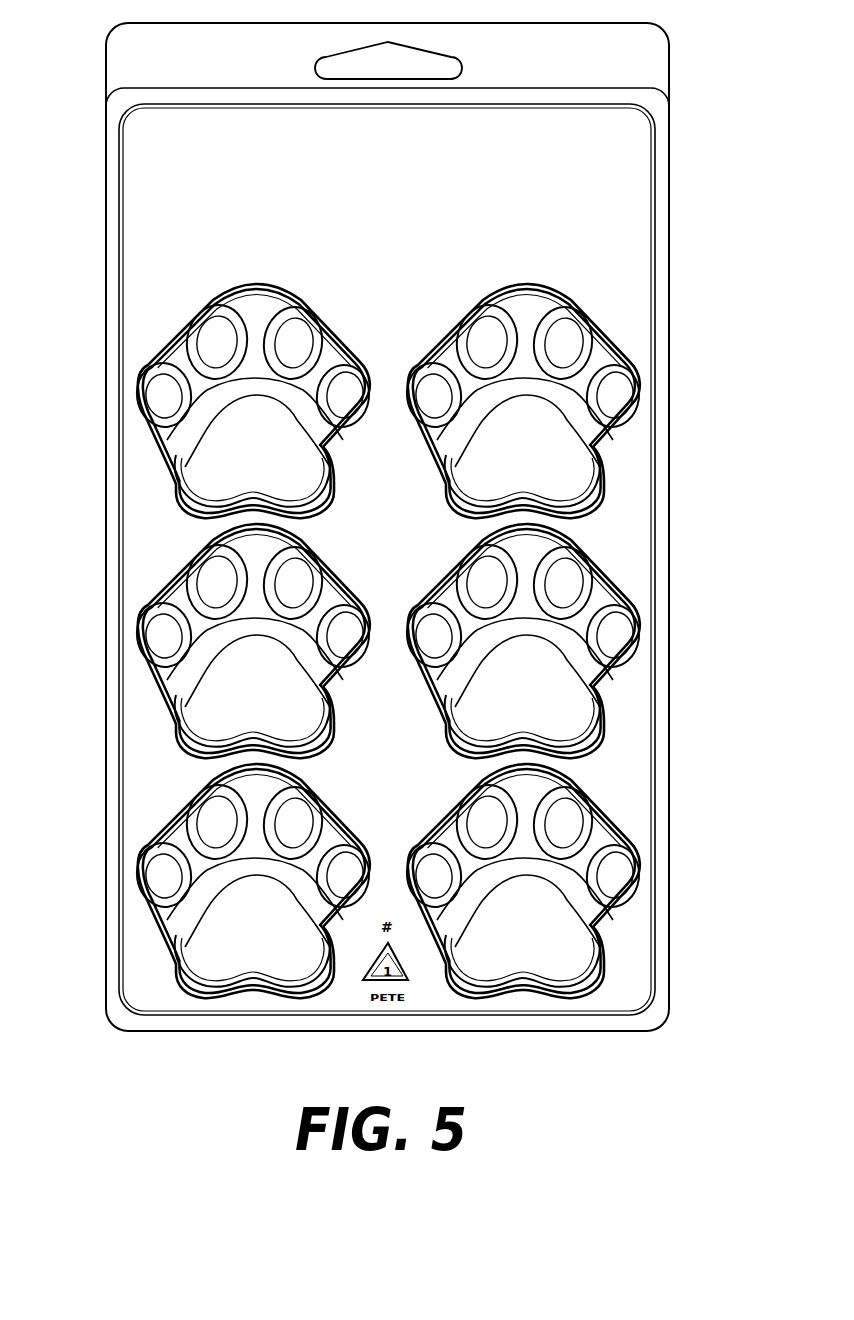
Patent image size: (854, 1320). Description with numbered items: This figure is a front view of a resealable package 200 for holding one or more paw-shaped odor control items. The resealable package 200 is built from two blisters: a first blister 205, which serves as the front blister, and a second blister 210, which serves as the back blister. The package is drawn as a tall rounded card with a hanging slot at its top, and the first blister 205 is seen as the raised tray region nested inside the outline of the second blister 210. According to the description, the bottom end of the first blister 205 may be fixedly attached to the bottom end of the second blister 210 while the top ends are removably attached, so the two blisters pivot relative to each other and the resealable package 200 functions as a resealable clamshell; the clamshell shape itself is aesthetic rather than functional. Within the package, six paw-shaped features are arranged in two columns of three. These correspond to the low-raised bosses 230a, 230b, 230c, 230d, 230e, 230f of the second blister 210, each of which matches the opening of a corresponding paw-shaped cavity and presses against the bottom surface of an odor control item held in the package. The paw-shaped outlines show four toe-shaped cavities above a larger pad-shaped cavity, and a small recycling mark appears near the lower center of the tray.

The resealable package 200 is at (677, 1037).
The first blister 205 is at (669, 188).
The second blister 210 is at (669, 57).
The low-raised boss 230a is at (634, 384).
The low-raised boss 230b is at (634, 624).
The low-raised boss 230c is at (634, 864).
The low-raised boss 230d is at (141, 388).
The low-raised boss 230e is at (141, 628).
The low-raised boss 230f is at (141, 868).